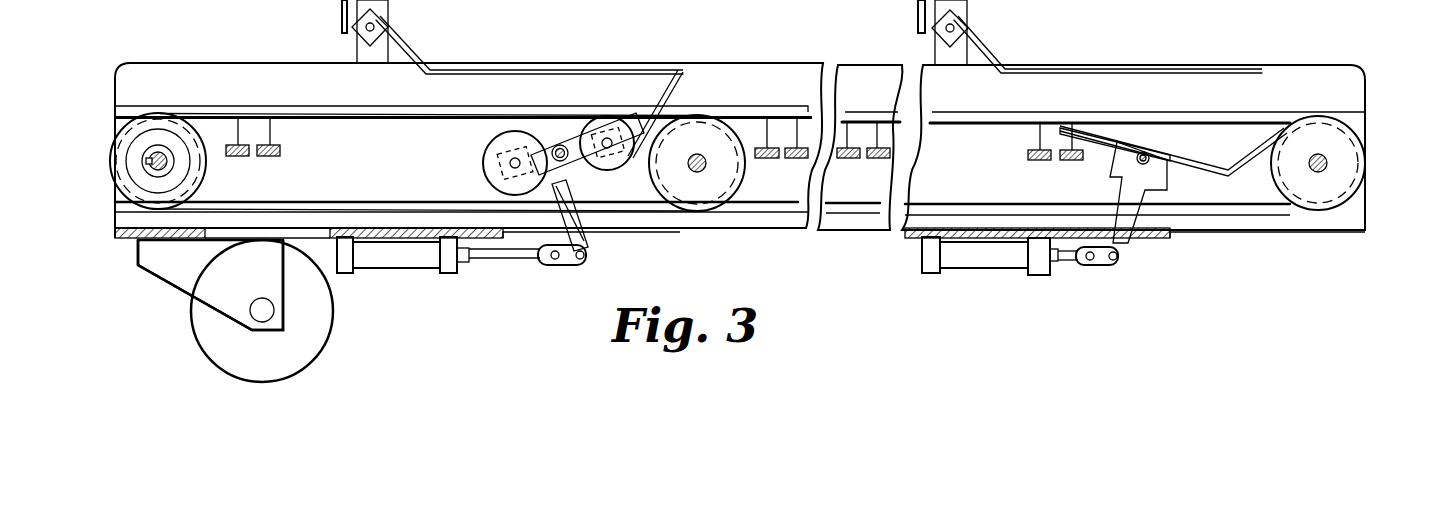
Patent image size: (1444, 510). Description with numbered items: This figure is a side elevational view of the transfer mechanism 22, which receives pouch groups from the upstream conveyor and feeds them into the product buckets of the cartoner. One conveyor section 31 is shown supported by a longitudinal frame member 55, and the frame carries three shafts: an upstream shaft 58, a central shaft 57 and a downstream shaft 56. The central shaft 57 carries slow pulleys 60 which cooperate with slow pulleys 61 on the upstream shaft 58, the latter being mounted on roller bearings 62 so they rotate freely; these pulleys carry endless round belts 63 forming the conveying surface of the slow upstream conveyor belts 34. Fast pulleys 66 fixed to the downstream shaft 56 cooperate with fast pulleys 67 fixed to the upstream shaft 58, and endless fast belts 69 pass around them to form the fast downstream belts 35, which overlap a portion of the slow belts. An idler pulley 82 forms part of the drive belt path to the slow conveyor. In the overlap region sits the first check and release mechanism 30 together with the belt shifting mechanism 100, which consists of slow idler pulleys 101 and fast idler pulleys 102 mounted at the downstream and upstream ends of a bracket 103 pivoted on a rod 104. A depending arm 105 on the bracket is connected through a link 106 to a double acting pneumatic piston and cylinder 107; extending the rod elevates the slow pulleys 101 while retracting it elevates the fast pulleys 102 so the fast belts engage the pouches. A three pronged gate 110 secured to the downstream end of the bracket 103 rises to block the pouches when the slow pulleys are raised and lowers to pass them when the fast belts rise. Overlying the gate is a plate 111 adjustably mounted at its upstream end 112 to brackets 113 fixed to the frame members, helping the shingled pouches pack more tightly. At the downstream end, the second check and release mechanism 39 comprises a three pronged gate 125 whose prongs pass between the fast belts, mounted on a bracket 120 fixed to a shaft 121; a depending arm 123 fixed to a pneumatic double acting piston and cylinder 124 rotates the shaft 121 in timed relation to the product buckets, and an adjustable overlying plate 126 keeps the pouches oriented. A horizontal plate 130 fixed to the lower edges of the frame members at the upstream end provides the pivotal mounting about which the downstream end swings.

The transfer mechanism 22 is at (210, 400).
The first check and release mechanism 30 is at (639, 86).
The conveyor section 31 is at (771, 242).
The upstream conveyor belts 34 is at (692, 114).
The downstream belts 35 is at (993, 128).
The second check and release mechanism 39 is at (1262, 99).
The longitudinal frame members 55 is at (427, 182).
The downstream shaft 56 is at (1330, 165).
The central shaft 57 is at (706, 165).
The upstream shaft 58 is at (166, 168).
The slow pulleys 60 is at (697, 163).
The slow pulleys 61 is at (160, 121).
The roller bearings 62 is at (137, 150).
The endless round belts 63 is at (681, 114).
The fast pulleys 66 is at (1318, 163).
The fast pulleys 67 is at (150, 175).
The endless fast belts 69 is at (472, 122).
The idler pulley 82 is at (262, 311).
The belt shifting mechanism 100 is at (606, 187).
The slow idler pulleys 101 is at (607, 122).
The fast idler pulleys 102 is at (493, 172).
The bracket 103 is at (558, 143).
The rod 104 is at (563, 146).
The depending arm 105 is at (588, 243).
The link 106 is at (573, 258).
The double acting pneumatic piston and cylinder 107 is at (421, 270).
The three pronged gate 110 is at (679, 86).
The plate 111 is at (478, 70).
The upstream end 112 is at (386, 46).
The brackets 113 is at (356, 40).
The bracket 120 is at (1164, 173).
The shaft 121 is at (1137, 164).
The depending arm 123 is at (1128, 244).
The pneumatic double acting piston and cylinder 124 is at (1000, 272).
The three pronged gate 125 is at (1173, 151).
The adjustable overlying plate 126 is at (1218, 70).
The horizontal plate 130 is at (117, 240).